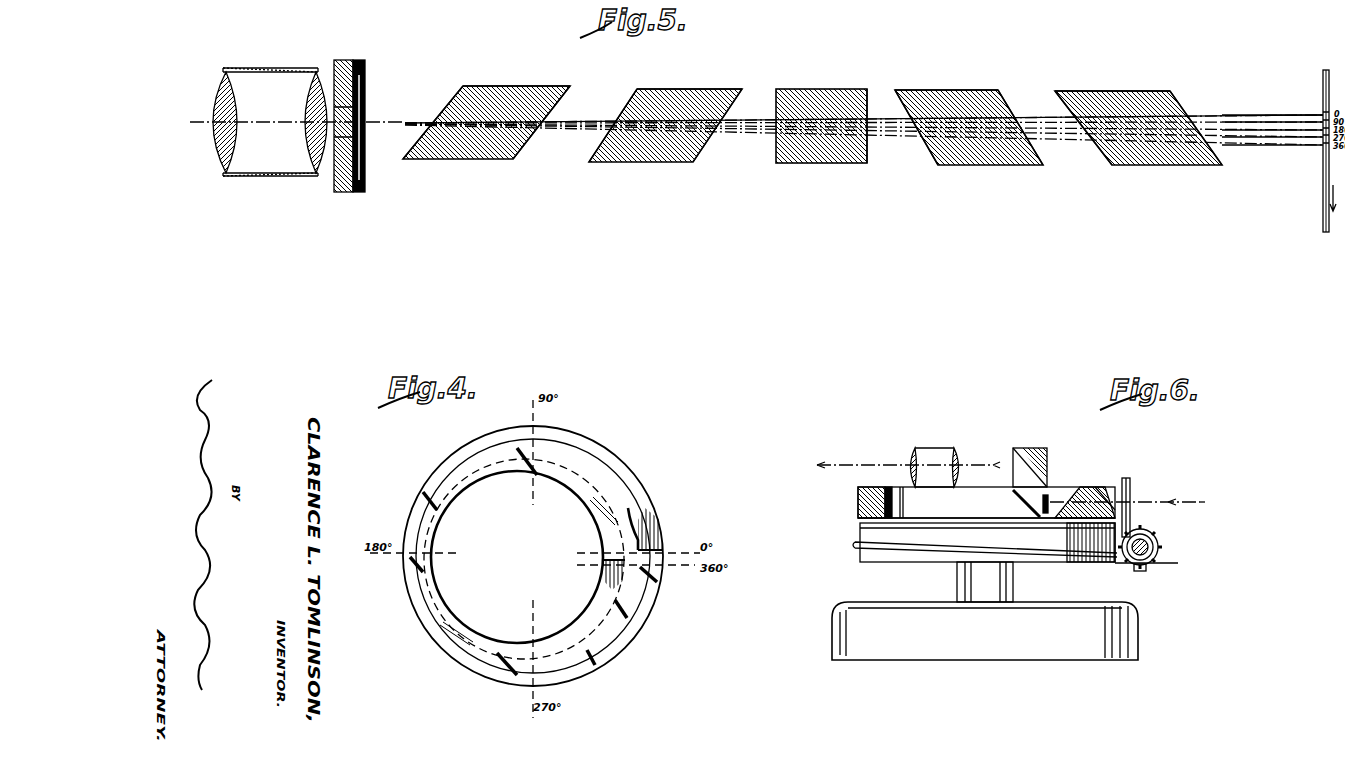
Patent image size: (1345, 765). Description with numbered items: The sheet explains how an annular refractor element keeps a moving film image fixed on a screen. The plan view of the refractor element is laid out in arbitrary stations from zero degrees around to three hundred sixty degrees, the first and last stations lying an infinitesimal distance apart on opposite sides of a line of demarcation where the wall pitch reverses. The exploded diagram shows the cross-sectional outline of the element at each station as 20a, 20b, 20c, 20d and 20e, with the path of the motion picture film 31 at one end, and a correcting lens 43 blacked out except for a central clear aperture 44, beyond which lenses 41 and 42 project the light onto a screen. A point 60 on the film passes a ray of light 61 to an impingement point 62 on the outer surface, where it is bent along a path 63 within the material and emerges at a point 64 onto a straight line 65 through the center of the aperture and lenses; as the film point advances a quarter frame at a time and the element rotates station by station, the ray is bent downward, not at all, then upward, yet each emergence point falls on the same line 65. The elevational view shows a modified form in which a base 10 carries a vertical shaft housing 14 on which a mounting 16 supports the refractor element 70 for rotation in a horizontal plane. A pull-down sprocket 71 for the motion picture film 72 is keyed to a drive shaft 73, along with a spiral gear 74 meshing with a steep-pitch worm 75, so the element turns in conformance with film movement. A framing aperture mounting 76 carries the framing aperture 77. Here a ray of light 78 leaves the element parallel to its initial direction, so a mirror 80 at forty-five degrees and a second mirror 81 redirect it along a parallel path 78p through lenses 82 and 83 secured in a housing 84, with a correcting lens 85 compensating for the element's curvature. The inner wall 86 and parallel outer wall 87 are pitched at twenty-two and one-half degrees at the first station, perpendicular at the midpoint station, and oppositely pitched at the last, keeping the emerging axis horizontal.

In FIG. 5, the lens 42 is at (215, 76).
In FIG. 5, the lens 41 is at (316, 70).
In FIG. 5, the correcting lens 43 is at (345, 192).
In FIG. 5, the clear aperture 44 is at (365, 108).
In FIG. 5, the straight line path 65 is at (398, 120).
In FIG. 5, the cross-sectional outline at station 0° 20a is at (1166, 166).
In FIG. 5, the cross-sectional outline at station 90° 20b is at (984, 166).
In FIG. 5, the cross-sectional outline at station 180° 20c is at (818, 164).
In FIG. 5, the cross-sectional outline at station 270° 20d is at (648, 163).
In FIG. 5, the cross-sectional outline at station 360° 20e is at (448, 160).
In FIG. 5, the emergence point 64 is at (436, 122).
In FIG. 5, the refracted path 63 is at (490, 122).
In FIG. 5, the impingement point 62 is at (530, 135).
In FIG. 5, the ray of light 61 is at (1222, 115).
In FIG. 5, the point on the film 60 is at (1322, 114).
In FIG. 4, the point on the film 60 is at (535, 440).
In FIG. 5, the motion picture film 31 is at (1322, 220).
In FIG. 6, the base 10 is at (1138, 640).
In FIG. 6, the shaft housing 14 is at (1013, 582).
In FIG. 6, the mounting 16 is at (860, 524).
In FIG. 6, the refractor element 70 is at (858, 495).
In FIG. 6, the pull-down sprocket 71 is at (1158, 548).
In FIG. 6, the motion picture film 72 is at (1126, 480).
In FIG. 6, the drive shaft 73 is at (1142, 566).
In FIG. 6, the spiral gear 74 is at (1160, 536).
In FIG. 6, the worm 75 is at (1098, 556).
In FIG. 6, the framing aperture mounting 76 is at (1130, 486).
In FIG. 6, the framing aperture 77 is at (1130, 500).
In FIG. 6, the ray of light 78 is at (1202, 502).
In FIG. 6, the parallel path 78p is at (968, 465).
In FIG. 6, the mirror 80 is at (1016, 494).
In FIG. 6, the second mirror 81 is at (1030, 450).
In FIG. 6, the lens 82 is at (955, 450).
In FIG. 6, the lens 83 is at (912, 458).
In FIG. 6, the housing 84 is at (918, 448).
In FIG. 6, the correcting lens 85 is at (1048, 494).
In FIG. 6, the inner wall 86 is at (1067, 528).
In FIG. 6, the outer wall 87 is at (1094, 488).